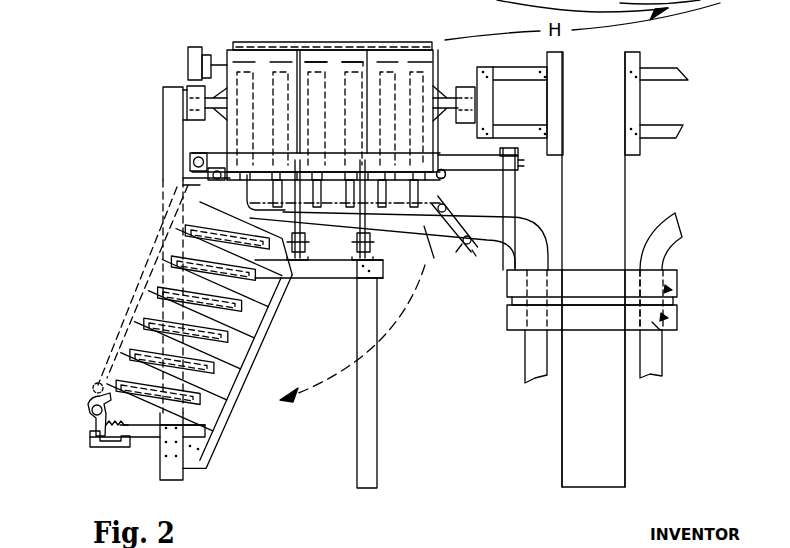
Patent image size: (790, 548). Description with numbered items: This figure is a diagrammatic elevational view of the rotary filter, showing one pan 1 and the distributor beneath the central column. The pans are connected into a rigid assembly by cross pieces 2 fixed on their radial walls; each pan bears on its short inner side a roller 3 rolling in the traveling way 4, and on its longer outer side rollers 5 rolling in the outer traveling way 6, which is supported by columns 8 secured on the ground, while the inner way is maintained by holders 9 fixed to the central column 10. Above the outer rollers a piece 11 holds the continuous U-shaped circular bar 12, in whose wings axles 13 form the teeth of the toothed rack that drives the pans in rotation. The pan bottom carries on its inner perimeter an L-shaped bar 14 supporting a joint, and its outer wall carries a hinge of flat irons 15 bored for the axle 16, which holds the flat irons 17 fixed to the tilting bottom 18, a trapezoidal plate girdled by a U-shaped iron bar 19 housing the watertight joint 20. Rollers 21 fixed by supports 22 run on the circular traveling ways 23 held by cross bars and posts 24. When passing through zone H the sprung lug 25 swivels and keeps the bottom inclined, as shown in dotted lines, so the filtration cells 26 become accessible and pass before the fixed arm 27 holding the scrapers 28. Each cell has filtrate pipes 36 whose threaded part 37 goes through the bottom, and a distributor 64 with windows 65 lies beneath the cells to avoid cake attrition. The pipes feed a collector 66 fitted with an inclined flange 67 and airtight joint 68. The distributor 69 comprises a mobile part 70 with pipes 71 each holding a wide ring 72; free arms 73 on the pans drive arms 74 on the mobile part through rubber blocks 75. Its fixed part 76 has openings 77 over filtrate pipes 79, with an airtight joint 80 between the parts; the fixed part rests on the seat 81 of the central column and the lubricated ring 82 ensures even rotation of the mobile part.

The pan 1 is at (398, 78).
The cross piece 2 is at (297, 50).
The roller 3 is at (458, 90).
The traveling way 4 is at (470, 88).
The roller 5 is at (188, 93).
The outer traveling way 6 is at (190, 88).
The column 8 is at (172, 125).
The holder 9 is at (515, 75).
The central column 10 is at (612, 178).
The piece 11 is at (227, 63).
The U-shaped circular bar 12 is at (203, 56).
The axle 13 is at (188, 63).
The L-shaped bar 14 is at (447, 174).
The flat iron 15 is at (214, 166).
The axle 16 is at (190, 162).
The flat iron 17 is at (195, 180).
The tilting bottom 18 is at (121, 316).
The U-shaped iron bar 19 is at (94, 384).
The watertight joint 20 is at (92, 397).
The roller 21 is at (360, 283).
The support 22 is at (365, 202).
The traveling way 23 is at (385, 250).
The post 24 is at (305, 276).
The sprung lug 25 is at (93, 417).
The filtration cell 26 is at (270, 62).
The fixed arm 27 is at (232, 390).
The scraper 28 is at (240, 378).
The pipe 36 is at (200, 202).
The threaded part 37 is at (246, 190).
The distributor 64 is at (352, 62).
The window 65 is at (333, 60).
The collector 66 is at (430, 252).
The flange 67 is at (462, 246).
The airtight joint 68 is at (472, 252).
The distributor 69 is at (665, 317).
The mobile part 70 is at (672, 272).
The pipe 71 is at (526, 234).
The ring 72 is at (470, 226).
The free arm 73 is at (472, 162).
The arm 74 is at (513, 183).
The rubber block 75 is at (524, 163).
The fixed part 76 is at (667, 320).
The opening 77 is at (665, 333).
The pipe 79 is at (652, 368).
The airtight joint 80 is at (508, 300).
The seat 81 is at (597, 333).
The lubricated ring 82 is at (638, 268).